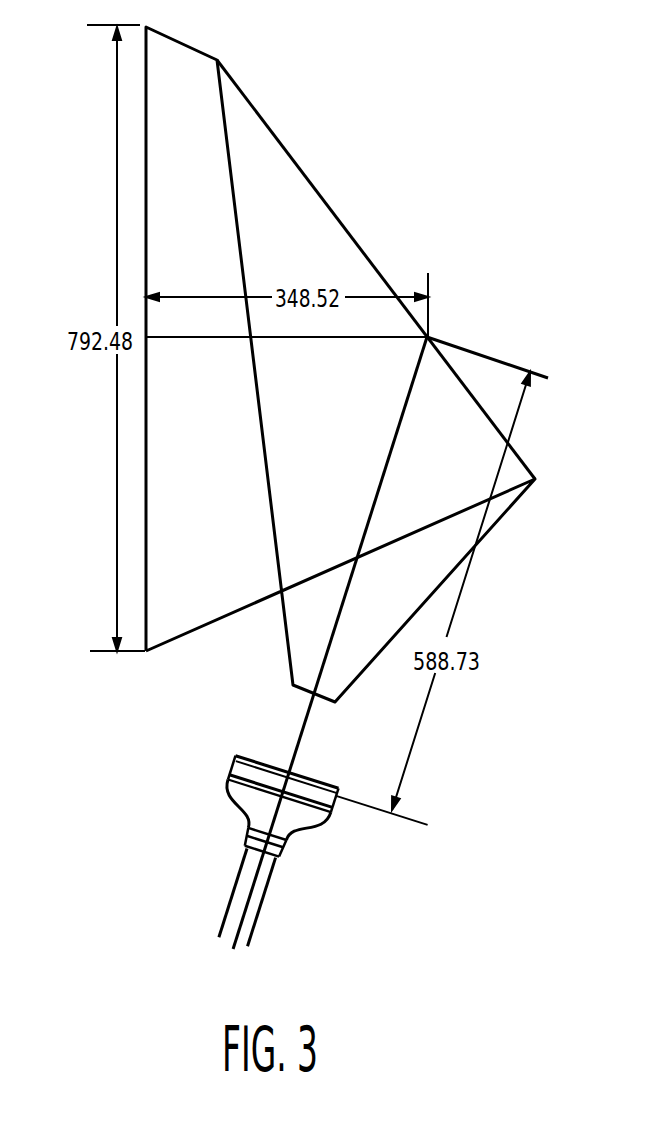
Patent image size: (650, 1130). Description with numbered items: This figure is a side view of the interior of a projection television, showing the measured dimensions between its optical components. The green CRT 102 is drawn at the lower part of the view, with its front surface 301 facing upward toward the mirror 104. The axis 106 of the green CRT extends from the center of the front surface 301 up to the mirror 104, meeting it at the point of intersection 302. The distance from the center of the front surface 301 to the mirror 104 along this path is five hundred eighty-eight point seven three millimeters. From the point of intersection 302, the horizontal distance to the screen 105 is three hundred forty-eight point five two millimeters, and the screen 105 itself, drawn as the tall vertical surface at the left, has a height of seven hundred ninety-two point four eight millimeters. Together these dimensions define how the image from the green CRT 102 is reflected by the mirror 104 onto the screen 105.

The green CRT 102 is at (274, 870).
The mirror 104 is at (337, 215).
The screen 105 is at (146, 317).
The axis 106 is at (392, 443).
The front surface 301 is at (333, 803).
The point of intersection 302 is at (432, 334).